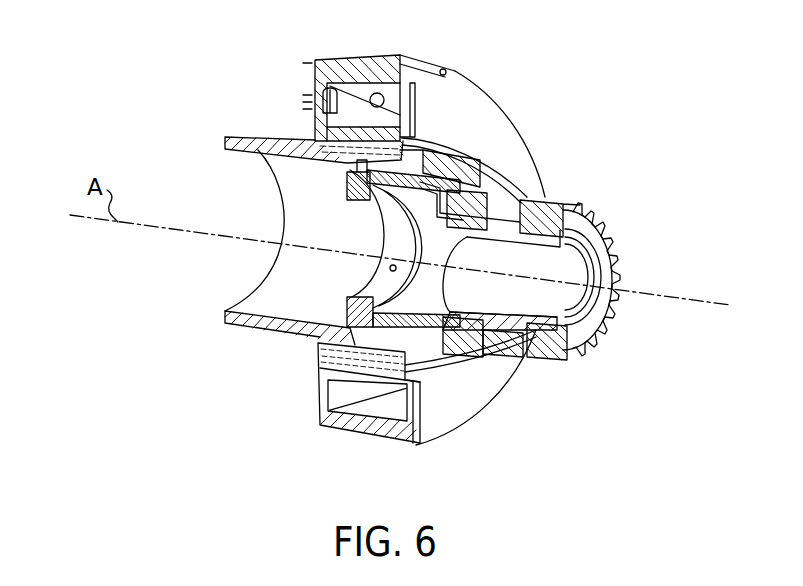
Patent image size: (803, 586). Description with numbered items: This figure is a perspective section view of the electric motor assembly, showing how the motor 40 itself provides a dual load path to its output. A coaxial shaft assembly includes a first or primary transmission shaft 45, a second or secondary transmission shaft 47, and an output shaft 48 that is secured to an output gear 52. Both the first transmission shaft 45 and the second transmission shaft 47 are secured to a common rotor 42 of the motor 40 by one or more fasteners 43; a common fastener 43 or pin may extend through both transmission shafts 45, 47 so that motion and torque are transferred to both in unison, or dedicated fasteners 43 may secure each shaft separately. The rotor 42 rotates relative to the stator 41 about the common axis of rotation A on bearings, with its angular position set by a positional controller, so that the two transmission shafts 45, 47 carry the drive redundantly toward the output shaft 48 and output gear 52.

The motor 40 is at (548, 108).
The stator 41 is at (316, 101).
The rotor 42 is at (315, 141).
The fasteners 43 is at (347, 168).
The first transmission shaft 45 is at (487, 200).
The second transmission shaft 47 is at (560, 262).
The output shaft 48 is at (567, 358).
The output gear 52 is at (596, 320).